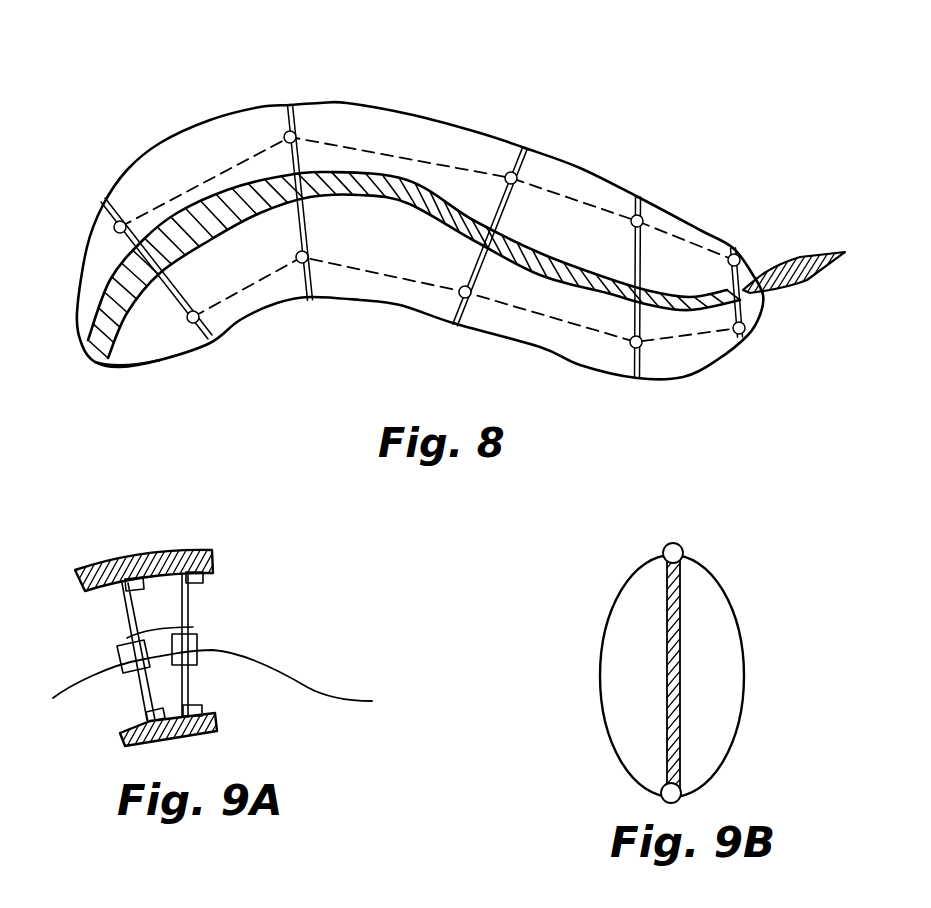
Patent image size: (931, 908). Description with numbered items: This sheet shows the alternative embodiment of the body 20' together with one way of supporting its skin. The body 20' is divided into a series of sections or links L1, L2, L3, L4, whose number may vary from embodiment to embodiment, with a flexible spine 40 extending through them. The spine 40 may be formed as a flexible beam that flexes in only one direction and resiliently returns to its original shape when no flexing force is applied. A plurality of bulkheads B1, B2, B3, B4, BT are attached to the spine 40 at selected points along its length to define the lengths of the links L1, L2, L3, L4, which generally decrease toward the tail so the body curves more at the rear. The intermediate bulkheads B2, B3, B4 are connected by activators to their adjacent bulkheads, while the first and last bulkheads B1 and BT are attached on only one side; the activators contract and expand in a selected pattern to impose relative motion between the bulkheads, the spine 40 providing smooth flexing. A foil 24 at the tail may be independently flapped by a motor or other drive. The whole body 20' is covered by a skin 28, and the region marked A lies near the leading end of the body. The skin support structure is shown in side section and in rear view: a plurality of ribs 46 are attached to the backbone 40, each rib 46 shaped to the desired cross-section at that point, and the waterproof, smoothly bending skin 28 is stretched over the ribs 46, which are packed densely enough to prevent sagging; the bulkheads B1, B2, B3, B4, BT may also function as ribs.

In FIG. 8, the body 20' is at (429, 172).
In FIG. 8, the skin 28 is at (459, 125).
In FIG. 9A, the skin 28 is at (158, 555).
In FIG. 8, the spine 40 is at (563, 246).
In FIG. 9A, the spine 40 is at (317, 697).
In FIG. 9B, the spine 40 is at (680, 678).
In FIG. 8, the foil 24 is at (797, 290).
In FIG. 9A, the rib 46 is at (132, 635).
In FIG. 9B, the rib 46 is at (638, 572).
In FIG. 8, the leading edge region A is at (148, 351).
In FIG. 8, the link L1 is at (223, 113).
In FIG. 8, the link L2 is at (410, 114).
In FIG. 8, the link L3 is at (567, 167).
In FIG. 8, the link L4 is at (697, 231).
In FIG. 8, the bulkhead B1 is at (103, 200).
In FIG. 8, the bulkhead B2 is at (311, 300).
In FIG. 8, the bulkhead B3 is at (523, 147).
In FIG. 8, the bulkhead B4 is at (638, 378).
In FIG. 8, the bulkhead BT is at (742, 336).